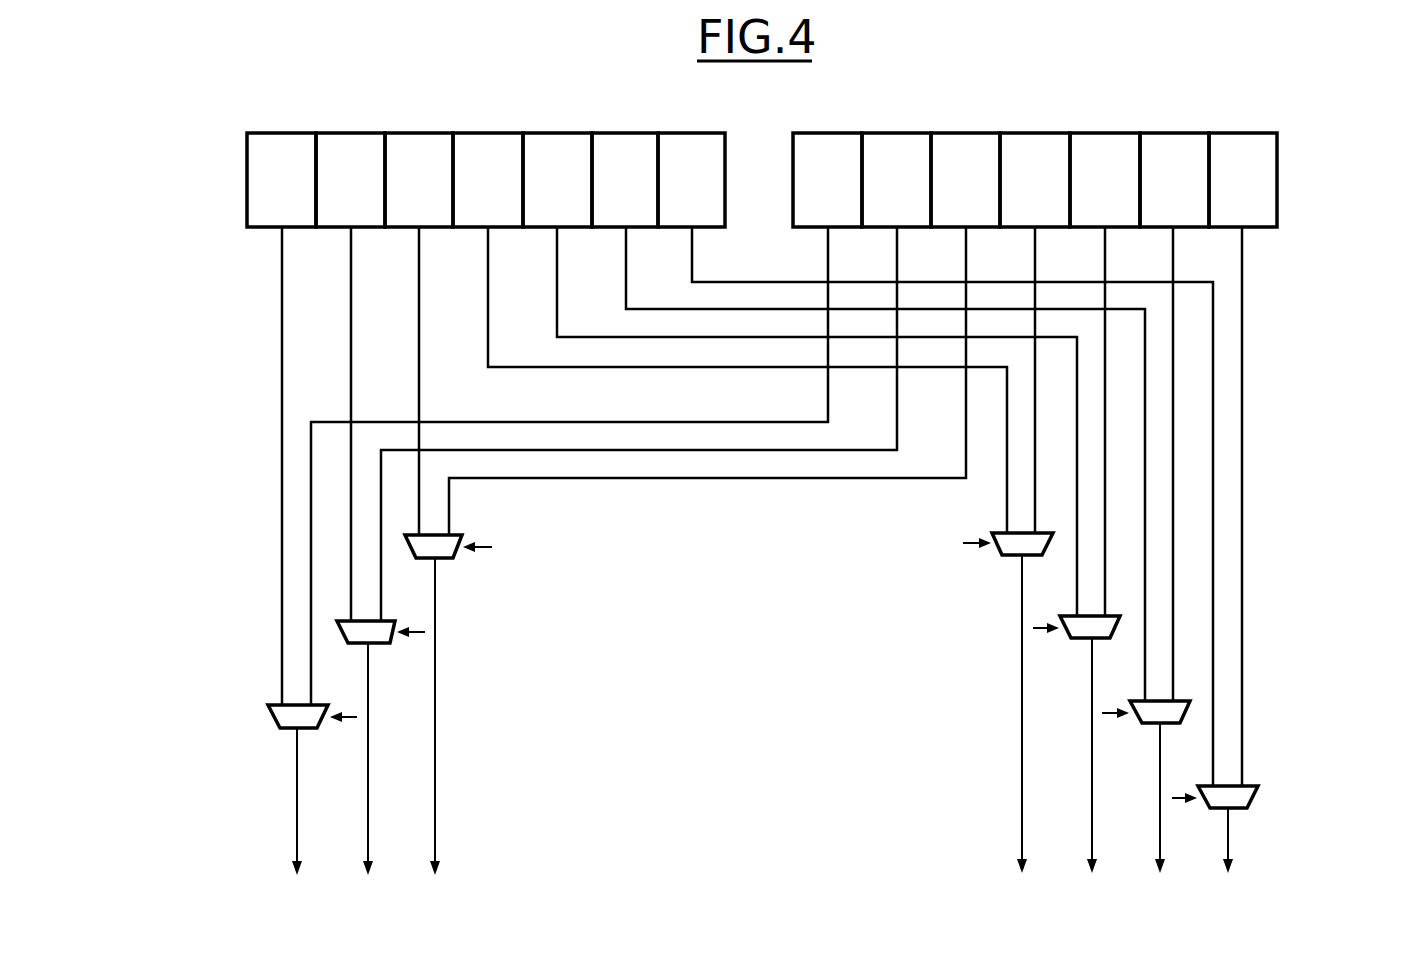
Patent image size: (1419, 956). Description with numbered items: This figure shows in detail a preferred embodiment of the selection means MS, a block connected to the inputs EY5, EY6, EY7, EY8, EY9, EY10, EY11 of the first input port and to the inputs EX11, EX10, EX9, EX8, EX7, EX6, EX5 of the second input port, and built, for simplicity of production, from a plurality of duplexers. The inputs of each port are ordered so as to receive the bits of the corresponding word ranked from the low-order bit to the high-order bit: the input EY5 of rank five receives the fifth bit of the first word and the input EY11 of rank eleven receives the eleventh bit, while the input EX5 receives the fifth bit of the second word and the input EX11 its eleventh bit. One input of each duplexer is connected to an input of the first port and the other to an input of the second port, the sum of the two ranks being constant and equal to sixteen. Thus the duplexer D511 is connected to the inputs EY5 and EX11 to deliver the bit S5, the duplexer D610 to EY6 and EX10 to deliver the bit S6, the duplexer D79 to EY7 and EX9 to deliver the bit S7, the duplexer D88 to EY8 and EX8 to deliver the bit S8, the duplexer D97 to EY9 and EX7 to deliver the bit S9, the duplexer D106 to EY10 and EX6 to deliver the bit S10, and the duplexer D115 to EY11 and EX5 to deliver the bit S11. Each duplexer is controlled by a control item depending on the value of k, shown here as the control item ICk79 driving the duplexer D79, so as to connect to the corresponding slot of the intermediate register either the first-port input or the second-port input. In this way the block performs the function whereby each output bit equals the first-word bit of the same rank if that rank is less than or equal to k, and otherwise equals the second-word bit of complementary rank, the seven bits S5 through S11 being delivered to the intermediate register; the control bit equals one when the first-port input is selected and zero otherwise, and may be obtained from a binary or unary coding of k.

The input of the first port of rank 5 EY5 is at (281, 180).
The input of the first port of rank 6 EY6 is at (350, 180).
The input of the first port of rank 7 EY7 is at (419, 180).
The input of the first port of rank 8 EY8 is at (488, 180).
The input of the first port of rank 9 EY9 is at (557, 180).
The input of the first port of rank 10 EY10 is at (625, 180).
The input of the first port of rank 11 EY11 is at (691, 180).
The input of the second port of rank 5 EX5 is at (1243, 180).
The input of the second port of rank 6 EX6 is at (1174, 180).
The input of the second port of rank 7 EX7 is at (1105, 180).
The input of the second port of rank 8 EX8 is at (1035, 180).
The input of the second port of rank 9 EX9 is at (965, 180).
The input of the second port of rank 10 EX10 is at (896, 180).
The input of the second port of rank 11 EX11 is at (827, 180).
The selection means MS is at (1282, 375).
The duplexer D511 is at (286, 719).
The duplexer D610 is at (368, 633).
The duplexer D79 is at (445, 548).
The control item ICk79 is at (513, 548).
The duplexer D88 is at (1005, 546).
The duplexer D97 is at (1090, 630).
The duplexer D106 is at (1160, 714).
The duplexer D115 is at (1242, 798).
The bit S5 is at (301, 817).
The bit S6 is at (368, 774).
The bit S7 is at (438, 732).
The bit S8 is at (1023, 728).
The bit S9 is at (1091, 769).
The bit S10 is at (1162, 812).
The bit S11 is at (1230, 854).